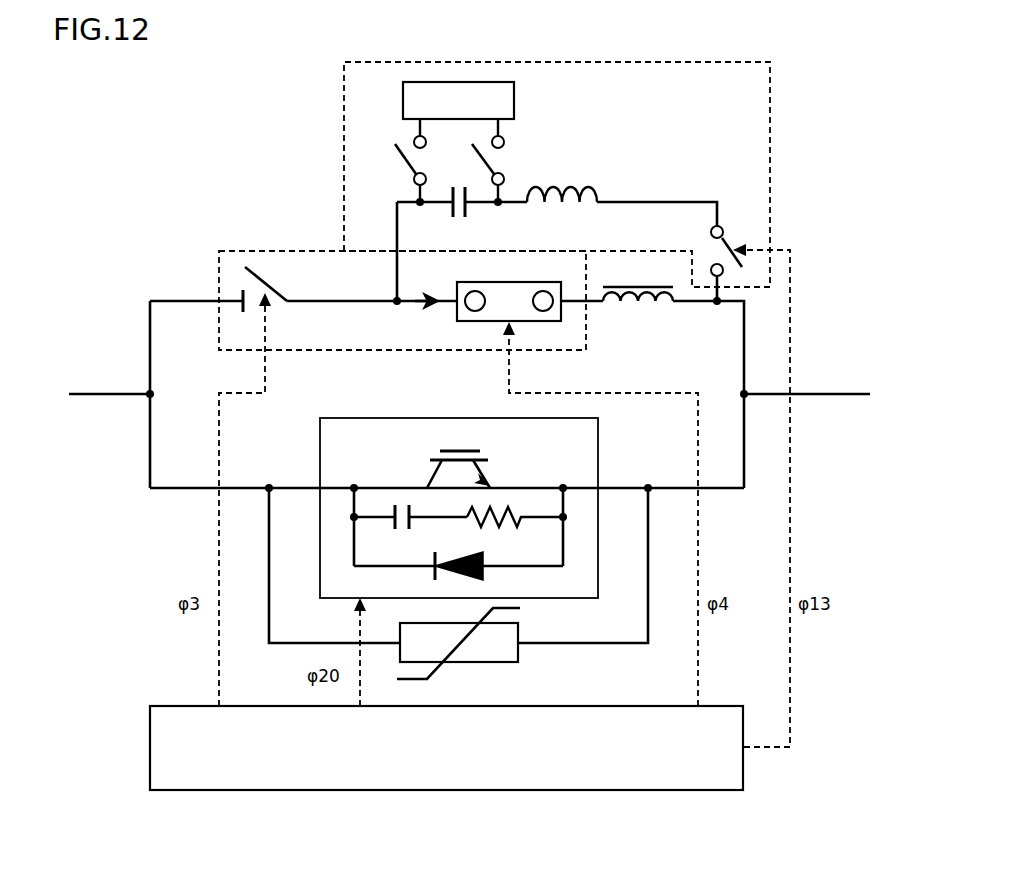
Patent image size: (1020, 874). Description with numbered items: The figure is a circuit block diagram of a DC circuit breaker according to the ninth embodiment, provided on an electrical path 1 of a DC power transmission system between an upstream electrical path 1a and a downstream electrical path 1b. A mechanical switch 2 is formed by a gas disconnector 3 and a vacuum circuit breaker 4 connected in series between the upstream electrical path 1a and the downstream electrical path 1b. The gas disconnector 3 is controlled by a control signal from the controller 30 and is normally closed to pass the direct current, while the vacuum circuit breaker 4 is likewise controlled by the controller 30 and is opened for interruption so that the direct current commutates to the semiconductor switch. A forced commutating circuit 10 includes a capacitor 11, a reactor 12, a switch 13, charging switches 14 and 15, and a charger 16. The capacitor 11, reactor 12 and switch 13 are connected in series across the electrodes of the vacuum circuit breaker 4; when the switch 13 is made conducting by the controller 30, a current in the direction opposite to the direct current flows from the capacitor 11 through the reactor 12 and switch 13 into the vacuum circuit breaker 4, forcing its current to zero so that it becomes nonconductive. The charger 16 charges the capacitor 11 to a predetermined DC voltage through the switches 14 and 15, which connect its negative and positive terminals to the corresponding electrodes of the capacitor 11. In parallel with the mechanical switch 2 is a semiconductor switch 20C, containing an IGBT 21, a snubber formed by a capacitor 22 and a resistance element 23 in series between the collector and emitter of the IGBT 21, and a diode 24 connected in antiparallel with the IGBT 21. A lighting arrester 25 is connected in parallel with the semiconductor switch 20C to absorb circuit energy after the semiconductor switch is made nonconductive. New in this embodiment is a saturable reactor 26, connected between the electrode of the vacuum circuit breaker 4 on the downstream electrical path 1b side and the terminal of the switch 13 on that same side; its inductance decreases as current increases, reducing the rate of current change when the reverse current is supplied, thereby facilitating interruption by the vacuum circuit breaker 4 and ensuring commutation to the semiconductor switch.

The electrical path 1 is at (93, 394).
The upstream electrical path 1a is at (112, 398).
The downstream electrical path 1b is at (829, 396).
The mechanical switch 2 is at (233, 250).
The gas disconnector 3 is at (262, 278).
The vacuum circuit breaker 4 is at (511, 282).
The forced commutating circuit 10 is at (362, 60).
The capacitor 11 is at (468, 208).
The reactor 12 is at (589, 188).
The switch 13 is at (729, 243).
The switch 14 is at (402, 158).
The switch 15 is at (497, 160).
The charger 16 is at (516, 98).
The semiconductor switch 20C is at (388, 418).
The IGBT 21 is at (460, 456).
The capacitor 22 is at (388, 520).
The resistance element 23 is at (492, 524).
The diode 24 is at (480, 570).
The lighting arrester 25 is at (487, 663).
The saturable reactor 26 is at (645, 303).
The controller 30 is at (150, 749).